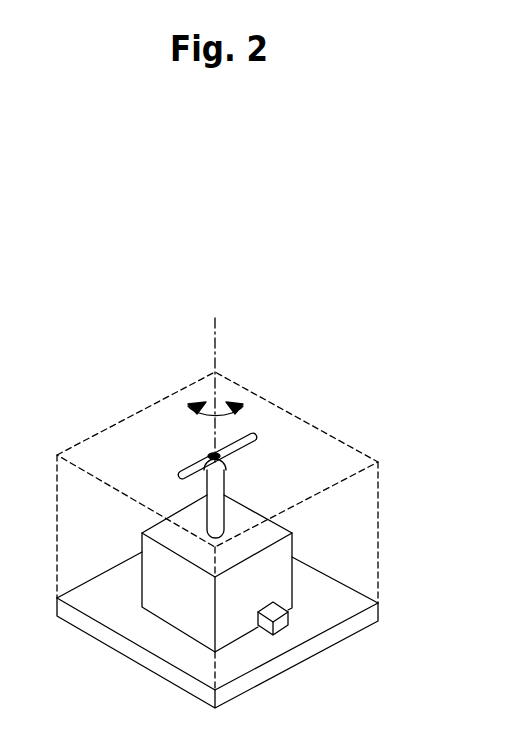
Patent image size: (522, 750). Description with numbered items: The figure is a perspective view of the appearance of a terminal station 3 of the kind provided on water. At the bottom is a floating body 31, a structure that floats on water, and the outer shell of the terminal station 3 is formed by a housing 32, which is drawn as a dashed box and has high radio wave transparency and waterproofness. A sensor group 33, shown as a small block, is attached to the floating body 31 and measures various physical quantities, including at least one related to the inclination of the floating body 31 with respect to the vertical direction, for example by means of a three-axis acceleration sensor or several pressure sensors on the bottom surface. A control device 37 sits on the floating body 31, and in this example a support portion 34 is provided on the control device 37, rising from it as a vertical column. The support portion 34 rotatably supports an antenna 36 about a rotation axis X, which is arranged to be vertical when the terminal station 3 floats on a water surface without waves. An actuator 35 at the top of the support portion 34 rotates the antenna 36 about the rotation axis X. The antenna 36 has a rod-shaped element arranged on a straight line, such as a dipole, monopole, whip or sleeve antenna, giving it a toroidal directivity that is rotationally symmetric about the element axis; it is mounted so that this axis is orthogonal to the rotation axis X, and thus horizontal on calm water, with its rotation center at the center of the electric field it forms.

The terminal station 3 is at (138, 312).
The rotation axis X is at (216, 342).
The floating body 31 is at (110, 648).
The housing 32 is at (270, 403).
The sensor group 33 is at (283, 625).
The support portion 34 is at (207, 484).
The actuator 35 is at (228, 470).
The antenna 36 is at (188, 465).
The control device 37 is at (278, 578).